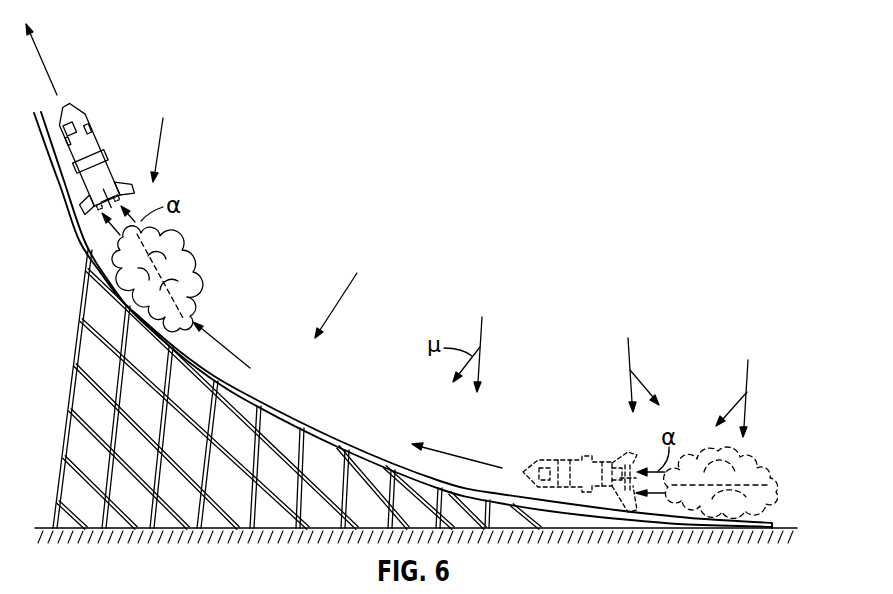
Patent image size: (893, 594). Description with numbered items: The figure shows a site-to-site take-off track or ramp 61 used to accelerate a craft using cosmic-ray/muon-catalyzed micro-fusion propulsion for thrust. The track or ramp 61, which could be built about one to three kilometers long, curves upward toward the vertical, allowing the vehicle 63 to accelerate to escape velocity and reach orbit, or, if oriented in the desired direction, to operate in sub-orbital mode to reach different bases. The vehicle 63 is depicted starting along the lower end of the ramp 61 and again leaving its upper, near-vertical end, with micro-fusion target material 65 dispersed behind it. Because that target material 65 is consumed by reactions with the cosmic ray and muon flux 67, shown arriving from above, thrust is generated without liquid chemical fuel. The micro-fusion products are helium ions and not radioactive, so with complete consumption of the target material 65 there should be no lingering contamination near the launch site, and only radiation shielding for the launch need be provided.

The take-off track or ramp 61 is at (257, 402).
The vehicle 63 is at (545, 458).
The micro-fusion target material 65 is at (767, 475).
The cosmic ray and muon flux 67 is at (630, 357).